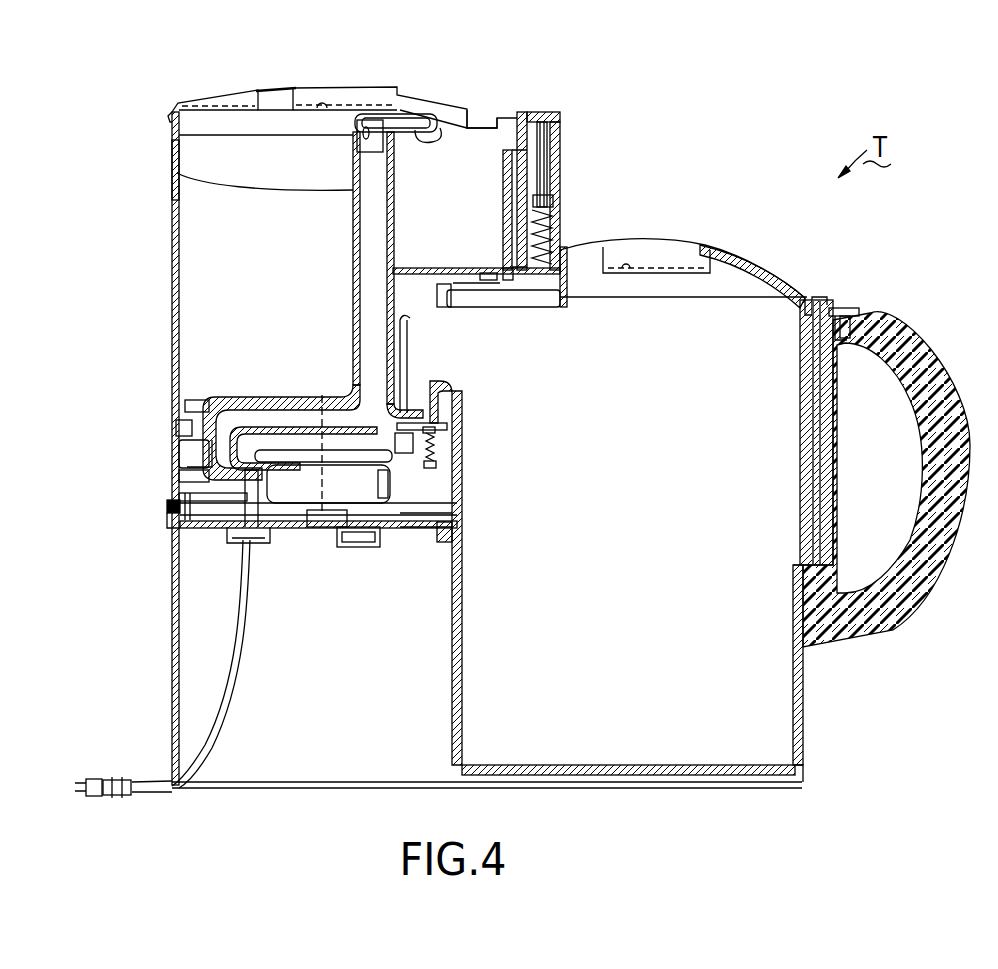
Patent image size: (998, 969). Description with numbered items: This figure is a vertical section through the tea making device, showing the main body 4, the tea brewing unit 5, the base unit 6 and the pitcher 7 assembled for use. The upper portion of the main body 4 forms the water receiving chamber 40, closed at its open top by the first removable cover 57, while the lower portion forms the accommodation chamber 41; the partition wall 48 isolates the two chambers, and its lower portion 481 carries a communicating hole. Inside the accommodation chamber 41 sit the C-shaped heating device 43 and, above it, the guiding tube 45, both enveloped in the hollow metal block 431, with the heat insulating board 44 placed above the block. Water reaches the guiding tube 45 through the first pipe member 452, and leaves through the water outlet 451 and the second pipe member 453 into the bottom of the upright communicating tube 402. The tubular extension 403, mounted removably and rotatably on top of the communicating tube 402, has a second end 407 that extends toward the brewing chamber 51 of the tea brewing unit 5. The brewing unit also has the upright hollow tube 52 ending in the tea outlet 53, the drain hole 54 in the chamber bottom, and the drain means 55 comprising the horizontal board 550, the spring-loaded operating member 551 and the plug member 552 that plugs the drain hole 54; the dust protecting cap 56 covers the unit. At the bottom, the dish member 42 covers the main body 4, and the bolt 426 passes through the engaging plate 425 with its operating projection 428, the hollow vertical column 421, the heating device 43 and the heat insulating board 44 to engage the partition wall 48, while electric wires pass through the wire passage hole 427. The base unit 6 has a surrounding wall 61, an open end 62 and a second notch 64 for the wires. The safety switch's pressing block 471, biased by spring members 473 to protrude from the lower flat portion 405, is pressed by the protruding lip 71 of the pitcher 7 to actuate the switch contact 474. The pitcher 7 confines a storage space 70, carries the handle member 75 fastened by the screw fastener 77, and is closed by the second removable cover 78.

The main body 4 is at (168, 217).
The water receiving chamber 40 is at (210, 250).
The communicating tube 402 is at (173, 180).
The tubular extension 403 is at (410, 108).
The lower flat portion 405 is at (420, 387).
The second end 407 is at (465, 112).
The accommodation chamber 41 is at (187, 467).
The dish member 42 is at (170, 513).
The hollow vertical column 421 is at (462, 543).
The engaging plate 425 is at (387, 540).
The bolt 426 is at (323, 543).
The wire passage hole 427 is at (250, 545).
The operating projection 428 is at (353, 545).
The heating device 43 is at (250, 495).
The hollow metal block 431 is at (392, 480).
The heat insulating board 44 is at (262, 395).
The guiding tube 45 is at (177, 508).
The water outlet 451 is at (190, 476).
The first pipe member 452 is at (193, 440).
The second pipe member 453 is at (203, 462).
The pressing block 471 is at (462, 398).
The spring members 473 is at (440, 462).
The switch contact 474 is at (440, 432).
The partition wall 48 is at (293, 450).
The lower portion 481 is at (178, 428).
The tea brewing unit 5 is at (561, 184).
The brewing chamber 51 is at (560, 164).
The upright hollow tube 52 is at (521, 112).
The tea outlet 53 is at (511, 290).
The drain hole 54 is at (533, 238).
The drain means 55 is at (557, 201).
The horizontal board 550 is at (482, 290).
The operating member 551 is at (552, 114).
The plug member 552 is at (513, 313).
The dust protecting cap 56 is at (517, 157).
The first removable cover 57 is at (291, 90).
The base unit 6 is at (168, 684).
The surrounding wall 61 is at (163, 530).
The open end 62 is at (187, 790).
The second notch 64 is at (168, 775).
The pitcher 7 is at (806, 709).
The space 70 is at (736, 350).
The protruding lip 71 is at (408, 323).
The handle member 75 is at (920, 367).
The screw fastener 77 is at (838, 308).
The second removable cover 78 is at (727, 257).